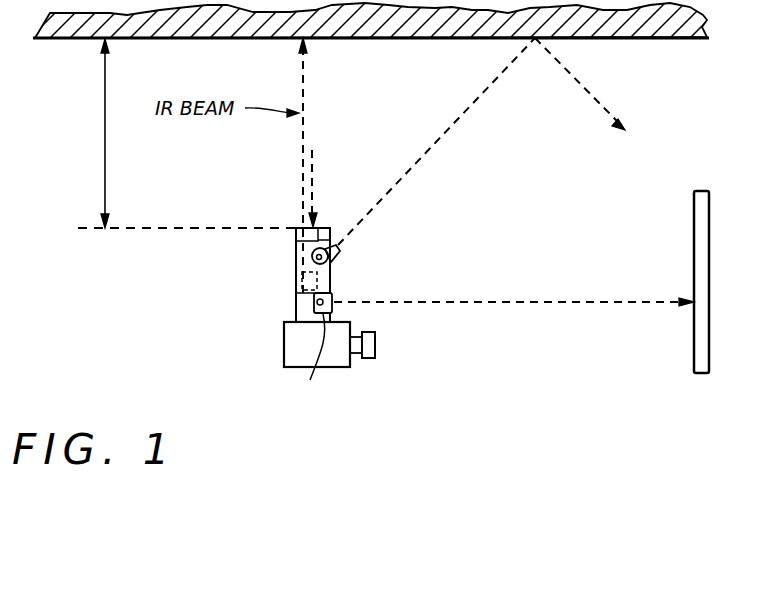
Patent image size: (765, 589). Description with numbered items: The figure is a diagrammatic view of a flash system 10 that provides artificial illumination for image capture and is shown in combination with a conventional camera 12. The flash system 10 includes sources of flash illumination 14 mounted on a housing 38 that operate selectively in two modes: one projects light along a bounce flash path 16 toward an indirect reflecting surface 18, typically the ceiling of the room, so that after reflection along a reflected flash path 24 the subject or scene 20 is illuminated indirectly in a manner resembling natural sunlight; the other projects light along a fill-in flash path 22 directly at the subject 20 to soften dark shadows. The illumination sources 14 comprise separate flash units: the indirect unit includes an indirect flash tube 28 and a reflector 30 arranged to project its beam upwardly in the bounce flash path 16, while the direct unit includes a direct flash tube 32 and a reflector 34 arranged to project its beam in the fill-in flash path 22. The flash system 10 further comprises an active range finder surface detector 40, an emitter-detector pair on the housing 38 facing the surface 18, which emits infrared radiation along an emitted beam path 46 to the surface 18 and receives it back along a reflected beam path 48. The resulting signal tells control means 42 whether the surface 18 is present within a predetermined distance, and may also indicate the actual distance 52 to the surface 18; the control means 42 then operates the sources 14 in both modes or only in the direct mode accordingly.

The flash system 10 is at (296, 262).
The camera 12 is at (284, 344).
The sources of flash illumination 14 is at (348, 268).
The bounce flash path 16 is at (478, 97).
The indirect reflecting surface 18 is at (407, 40).
The subject or scene 20 is at (683, 233).
The fill-in flash path 22 is at (565, 303).
The reflected flash path 24 is at (568, 74).
The indirect flash tube 28 is at (333, 256).
The reflector 30 is at (338, 262).
The direct flash tube 32 is at (305, 356).
The reflector 34 is at (333, 307).
The housing 38 is at (296, 300).
The surface detector 40 is at (296, 225).
The control means 42 is at (302, 279).
The emitted beam path 46 is at (298, 155).
The reflected beam path 48 is at (313, 153).
The distance 52 is at (105, 143).